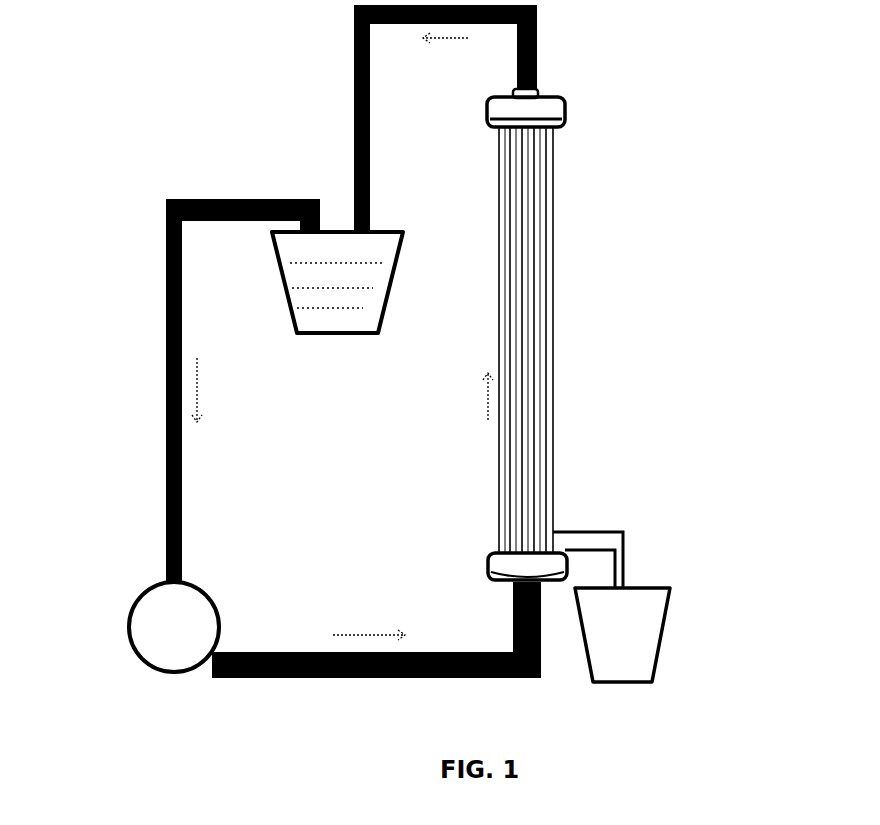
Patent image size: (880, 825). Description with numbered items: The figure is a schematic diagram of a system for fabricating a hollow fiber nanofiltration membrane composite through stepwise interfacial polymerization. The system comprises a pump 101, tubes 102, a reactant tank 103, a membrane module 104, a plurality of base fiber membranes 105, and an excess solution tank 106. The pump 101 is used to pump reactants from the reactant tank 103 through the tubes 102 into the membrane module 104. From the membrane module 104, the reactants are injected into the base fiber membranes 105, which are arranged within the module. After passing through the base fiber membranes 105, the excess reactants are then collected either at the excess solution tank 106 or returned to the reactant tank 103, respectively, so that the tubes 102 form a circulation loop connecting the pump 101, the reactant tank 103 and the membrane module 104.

The pump 101 is at (198, 613).
The tubes 102 is at (167, 295).
The reactant tank 103 is at (318, 300).
The membrane module 104 is at (568, 118).
The base fiber membranes 105 is at (532, 315).
The excess solution tank 106 is at (638, 617).